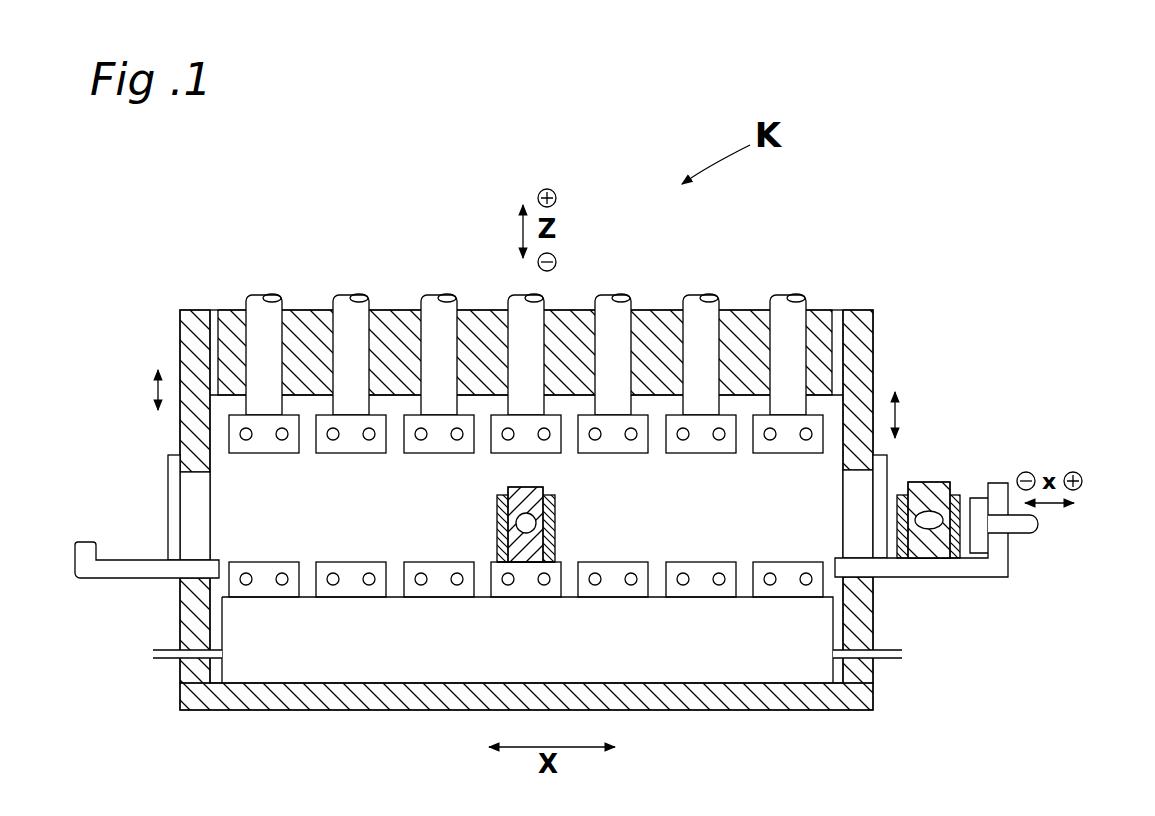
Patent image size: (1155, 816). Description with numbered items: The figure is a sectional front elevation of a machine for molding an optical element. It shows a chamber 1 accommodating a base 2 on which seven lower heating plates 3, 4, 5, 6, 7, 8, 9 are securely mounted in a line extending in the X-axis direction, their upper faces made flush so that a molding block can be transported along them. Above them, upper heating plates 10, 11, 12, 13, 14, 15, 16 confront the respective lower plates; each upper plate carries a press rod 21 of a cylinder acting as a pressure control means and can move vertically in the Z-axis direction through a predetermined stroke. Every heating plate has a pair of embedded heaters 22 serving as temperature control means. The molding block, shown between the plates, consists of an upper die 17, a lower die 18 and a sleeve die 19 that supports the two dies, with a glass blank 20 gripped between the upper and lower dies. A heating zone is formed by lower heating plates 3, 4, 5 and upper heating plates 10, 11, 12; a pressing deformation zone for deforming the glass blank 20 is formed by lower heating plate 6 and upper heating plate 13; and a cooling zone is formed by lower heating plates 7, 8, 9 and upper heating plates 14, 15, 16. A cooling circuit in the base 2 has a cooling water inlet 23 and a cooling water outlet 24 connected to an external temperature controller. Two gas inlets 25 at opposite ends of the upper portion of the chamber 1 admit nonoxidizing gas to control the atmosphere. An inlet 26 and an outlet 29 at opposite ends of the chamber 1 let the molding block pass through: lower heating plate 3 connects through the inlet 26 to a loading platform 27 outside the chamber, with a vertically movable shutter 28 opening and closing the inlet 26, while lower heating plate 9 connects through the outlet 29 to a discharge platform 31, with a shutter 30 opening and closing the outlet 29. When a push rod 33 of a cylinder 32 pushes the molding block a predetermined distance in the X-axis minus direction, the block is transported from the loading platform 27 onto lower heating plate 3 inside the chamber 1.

The chamber 1 is at (862, 326).
The base 2 is at (813, 615).
The lower heating plate 3 is at (762, 588).
The lower heating plate 4 is at (676, 588).
The lower heating plate 5 is at (592, 588).
The lower heating plate 6 is at (524, 588).
The lower heating plate 7 is at (418, 588).
The lower heating plate 8 is at (331, 588).
The lower heating plate 9 is at (246, 588).
The upper heating plate 10 is at (784, 450).
The upper heating plate 11 is at (699, 450).
The upper heating plate 12 is at (615, 447).
The upper heating plate 13 is at (523, 447).
The upper heating plate 14 is at (438, 453).
The upper heating plate 15 is at (352, 453).
The upper heating plate 16 is at (264, 453).
The upper die 17 is at (543, 486).
The lower die 18 is at (530, 548).
The sleeve die 19 is at (557, 527).
The glass blank 20 is at (500, 560).
The press rod 21 is at (263, 297).
The heaters 22 is at (247, 446).
The cooling water inlet 23 is at (903, 654).
The cooling water outlet 24 is at (156, 654).
The gas inlets 25 is at (218, 312).
The inlet 26 is at (865, 486).
The loading platform 27 is at (976, 568).
The shutter 28 is at (876, 456).
The outlet 29 is at (196, 503).
The shutter 30 is at (174, 535).
The discharge platform 31 is at (104, 575).
The cylinder 32 is at (1038, 526).
The push rod 33 is at (976, 498).